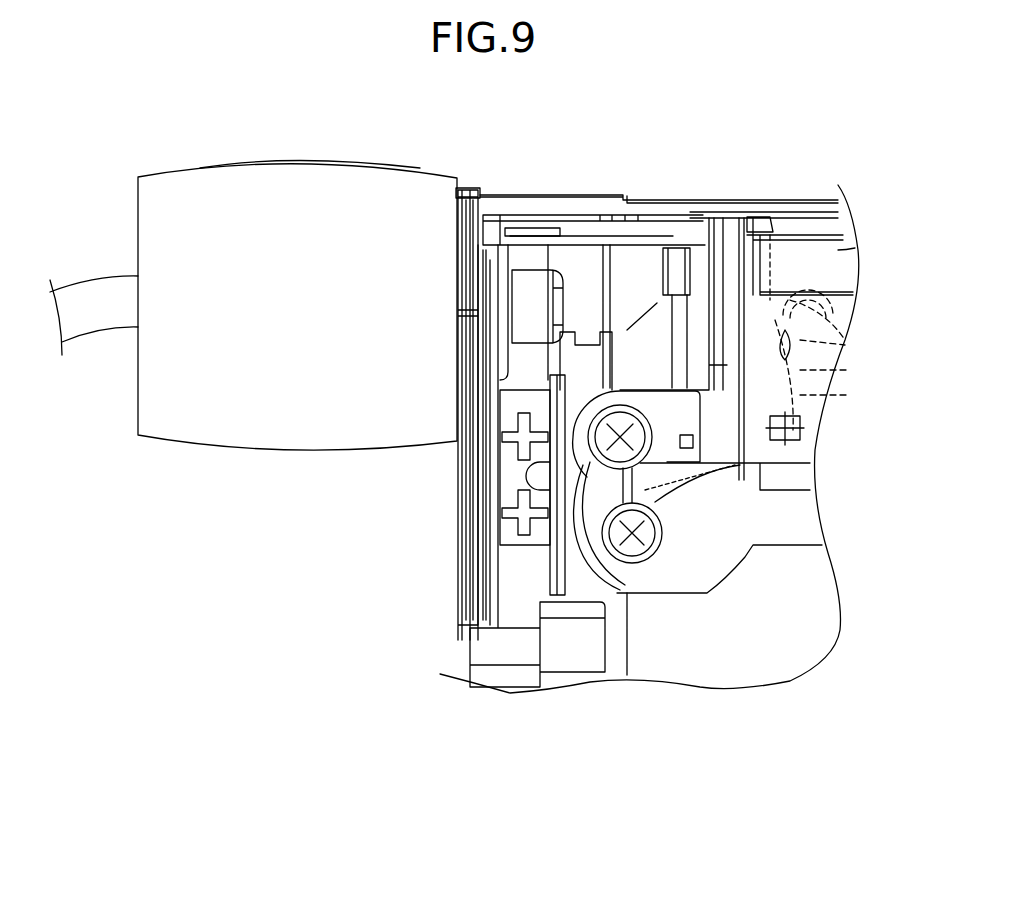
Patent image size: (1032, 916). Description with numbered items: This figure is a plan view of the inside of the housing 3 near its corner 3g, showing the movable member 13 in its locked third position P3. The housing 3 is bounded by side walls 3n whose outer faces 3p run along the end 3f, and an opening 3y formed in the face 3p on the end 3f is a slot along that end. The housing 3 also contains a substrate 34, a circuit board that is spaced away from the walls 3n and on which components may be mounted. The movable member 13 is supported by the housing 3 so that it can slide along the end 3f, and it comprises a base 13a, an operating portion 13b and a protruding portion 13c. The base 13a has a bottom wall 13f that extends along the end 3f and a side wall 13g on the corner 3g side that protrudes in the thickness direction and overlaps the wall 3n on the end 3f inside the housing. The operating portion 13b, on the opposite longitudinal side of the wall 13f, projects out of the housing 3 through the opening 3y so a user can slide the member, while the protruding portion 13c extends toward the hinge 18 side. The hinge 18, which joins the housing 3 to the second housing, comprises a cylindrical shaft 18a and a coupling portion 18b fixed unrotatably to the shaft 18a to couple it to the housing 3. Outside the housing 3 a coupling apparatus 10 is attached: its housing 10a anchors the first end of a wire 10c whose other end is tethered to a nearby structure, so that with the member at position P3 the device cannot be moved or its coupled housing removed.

The coupling apparatus 10 is at (205, 453).
The housing 10a is at (318, 156).
The wire 10c is at (92, 276).
The housing 3 is at (569, 192).
The end 3f is at (457, 587).
The wall 3n is at (398, 410).
The face 3p is at (416, 410).
The corner 3g is at (476, 190).
The opening 3y is at (460, 490).
The position P3 is at (541, 252).
The movable member 13 is at (611, 384).
The base 13a is at (588, 262).
The operating portion 13b is at (456, 453).
The protruding portion 13c is at (665, 268).
The wall 13f is at (518, 362).
The wall 13g is at (487, 293).
The hinge 18 is at (792, 258).
The shaft 18a is at (842, 257).
The coupling portion 18b is at (782, 393).
The substrate 34 is at (768, 667).